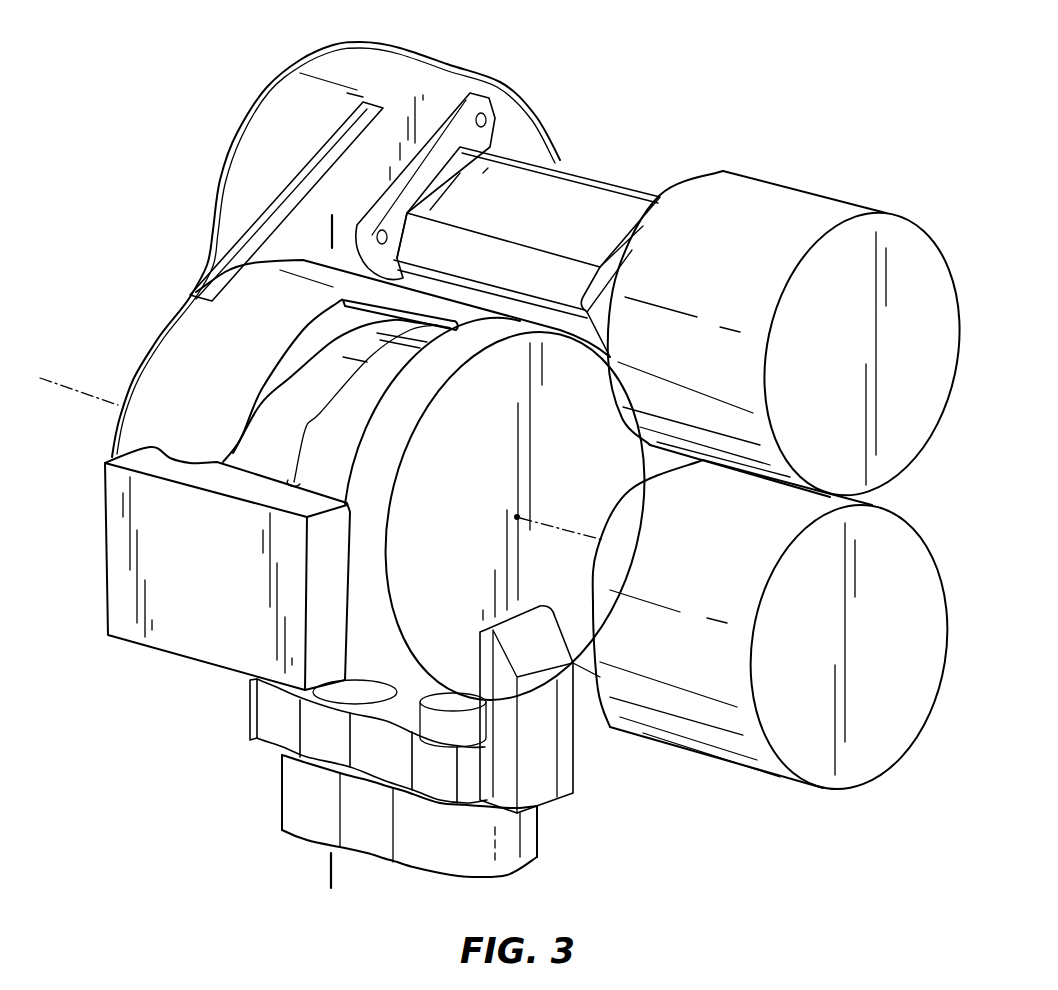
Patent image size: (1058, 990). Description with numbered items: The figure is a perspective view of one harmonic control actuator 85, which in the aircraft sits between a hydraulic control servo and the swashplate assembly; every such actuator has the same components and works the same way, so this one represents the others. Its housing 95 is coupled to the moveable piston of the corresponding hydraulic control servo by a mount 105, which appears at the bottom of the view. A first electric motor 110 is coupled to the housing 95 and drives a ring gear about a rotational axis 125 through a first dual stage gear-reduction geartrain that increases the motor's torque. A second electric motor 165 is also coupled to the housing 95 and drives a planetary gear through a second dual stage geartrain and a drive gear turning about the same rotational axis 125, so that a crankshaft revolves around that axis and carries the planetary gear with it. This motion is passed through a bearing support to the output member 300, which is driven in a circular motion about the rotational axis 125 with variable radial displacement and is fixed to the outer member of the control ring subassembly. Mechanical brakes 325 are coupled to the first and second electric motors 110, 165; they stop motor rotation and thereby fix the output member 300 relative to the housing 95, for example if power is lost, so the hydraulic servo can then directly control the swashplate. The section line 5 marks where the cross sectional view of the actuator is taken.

The harmonic control actuator 85 is at (763, 106).
The housing 95 is at (230, 134).
The first electric motor 110 is at (597, 183).
The mechanical brakes 325 is at (790, 181).
The rotational axis 125 is at (571, 532).
The output member 300 is at (186, 664).
The second electric motor 165 is at (583, 680).
The mount 105 is at (527, 837).
The section line 5- 5 is at (324, 233).